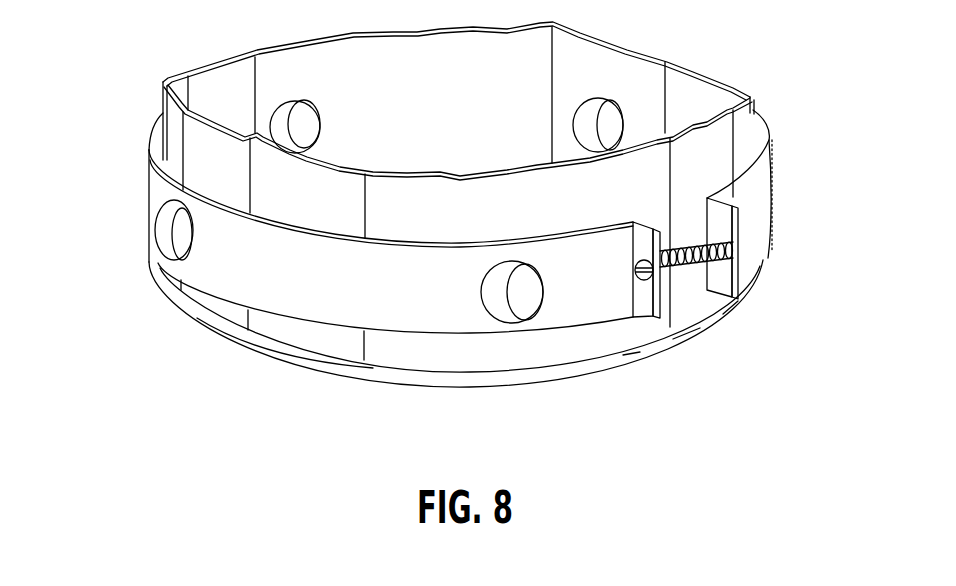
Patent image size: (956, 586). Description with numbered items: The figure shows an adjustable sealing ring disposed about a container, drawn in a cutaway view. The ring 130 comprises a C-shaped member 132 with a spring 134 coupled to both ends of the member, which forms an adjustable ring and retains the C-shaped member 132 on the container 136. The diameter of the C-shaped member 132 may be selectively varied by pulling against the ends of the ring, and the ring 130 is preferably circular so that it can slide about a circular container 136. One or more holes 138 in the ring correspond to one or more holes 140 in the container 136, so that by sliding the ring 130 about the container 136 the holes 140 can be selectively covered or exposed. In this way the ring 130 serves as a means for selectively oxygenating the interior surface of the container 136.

The ring 130 is at (760, 203).
The C-shaped member 132 is at (157, 193).
The spring 134 is at (690, 268).
The container 136 is at (173, 113).
The holes in the ring 138 is at (158, 207).
The holes in the container 140 is at (160, 267).